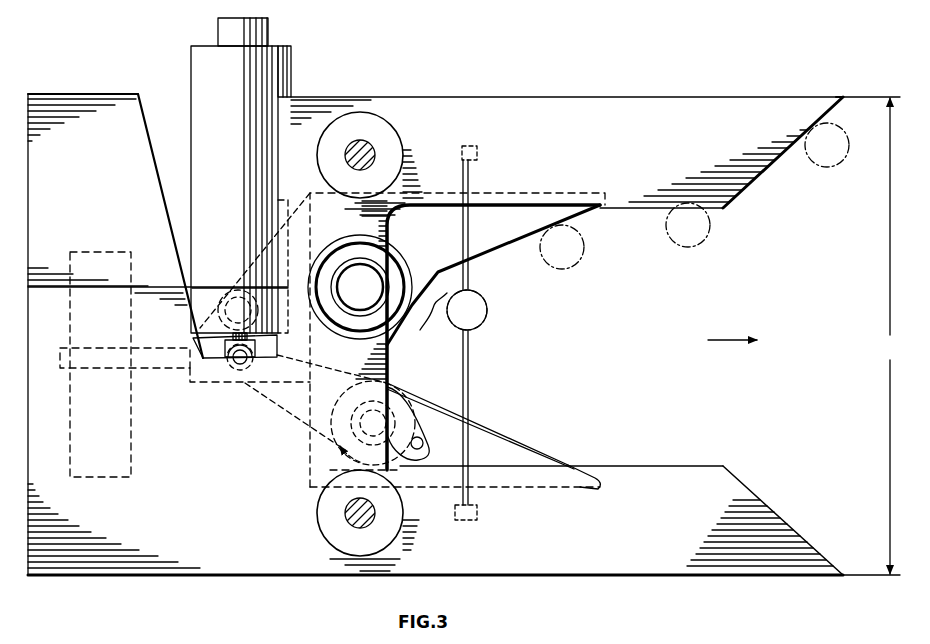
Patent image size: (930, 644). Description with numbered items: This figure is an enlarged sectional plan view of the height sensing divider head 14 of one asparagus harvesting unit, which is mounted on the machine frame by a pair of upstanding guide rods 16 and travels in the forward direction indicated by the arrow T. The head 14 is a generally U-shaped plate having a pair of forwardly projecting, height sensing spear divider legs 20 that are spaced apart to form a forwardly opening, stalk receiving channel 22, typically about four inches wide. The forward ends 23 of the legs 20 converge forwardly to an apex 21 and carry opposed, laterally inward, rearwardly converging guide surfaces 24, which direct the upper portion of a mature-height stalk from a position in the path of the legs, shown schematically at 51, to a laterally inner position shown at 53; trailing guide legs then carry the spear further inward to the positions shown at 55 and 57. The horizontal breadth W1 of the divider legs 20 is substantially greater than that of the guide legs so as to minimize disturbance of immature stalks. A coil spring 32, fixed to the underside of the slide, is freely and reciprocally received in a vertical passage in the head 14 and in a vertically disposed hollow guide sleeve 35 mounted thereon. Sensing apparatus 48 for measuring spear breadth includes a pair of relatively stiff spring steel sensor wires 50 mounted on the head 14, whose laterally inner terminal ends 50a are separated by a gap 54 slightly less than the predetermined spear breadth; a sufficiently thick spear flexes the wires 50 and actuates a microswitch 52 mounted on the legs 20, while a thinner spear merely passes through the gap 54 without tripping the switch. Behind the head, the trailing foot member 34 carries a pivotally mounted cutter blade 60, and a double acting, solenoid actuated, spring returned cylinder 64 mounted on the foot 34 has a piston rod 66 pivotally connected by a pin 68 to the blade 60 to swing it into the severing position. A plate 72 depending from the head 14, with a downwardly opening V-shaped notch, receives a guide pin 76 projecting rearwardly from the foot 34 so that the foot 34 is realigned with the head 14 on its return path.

The height sensing divider head 14 is at (477, 76).
The upstanding guide rods 16 is at (372, 145).
The height sensing spear divider legs 20 is at (628, 108).
The apex 21 is at (843, 97).
The stalk receiving channel 22 is at (737, 283).
The forward ends of the divider legs 23 is at (805, 93).
The guide surfaces 24 is at (773, 170).
The coil spring 32 is at (345, 250).
The foot member 34 is at (563, 492).
The hollow guide sleeve 35 is at (405, 263).
The sensing apparatus 48 is at (477, 390).
The sensor wires 50 is at (470, 352).
The laterally inner terminal ends of the sensor wires 50a is at (448, 333).
The stalk position in path of divider legs 51 is at (828, 167).
The microswitch 52 is at (478, 152).
The laterally inner stalk position 53 is at (697, 247).
The gap 54 is at (489, 318).
The stalk position 55 is at (566, 270).
The stalk position 57 is at (483, 298).
The cutter blade 60 is at (503, 448).
The cylinder 64 is at (200, 99).
The piston rod 66 is at (200, 345).
The pin 68 is at (237, 370).
The plate 72 is at (131, 456).
The guide pin 76 is at (145, 369).
The forward direction of travel T is at (728, 342).
The width of the divider legs W1 is at (873, 336).